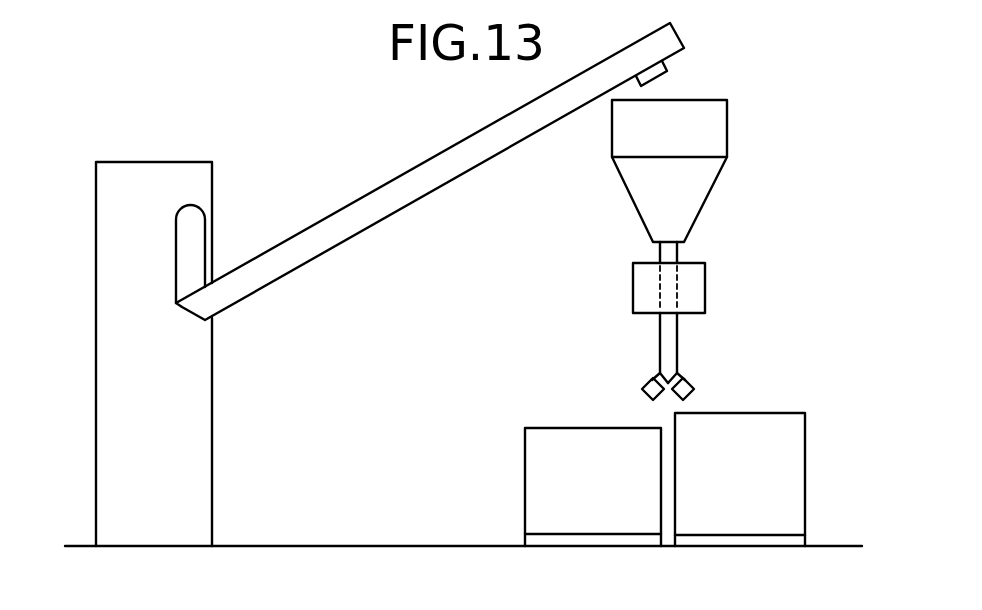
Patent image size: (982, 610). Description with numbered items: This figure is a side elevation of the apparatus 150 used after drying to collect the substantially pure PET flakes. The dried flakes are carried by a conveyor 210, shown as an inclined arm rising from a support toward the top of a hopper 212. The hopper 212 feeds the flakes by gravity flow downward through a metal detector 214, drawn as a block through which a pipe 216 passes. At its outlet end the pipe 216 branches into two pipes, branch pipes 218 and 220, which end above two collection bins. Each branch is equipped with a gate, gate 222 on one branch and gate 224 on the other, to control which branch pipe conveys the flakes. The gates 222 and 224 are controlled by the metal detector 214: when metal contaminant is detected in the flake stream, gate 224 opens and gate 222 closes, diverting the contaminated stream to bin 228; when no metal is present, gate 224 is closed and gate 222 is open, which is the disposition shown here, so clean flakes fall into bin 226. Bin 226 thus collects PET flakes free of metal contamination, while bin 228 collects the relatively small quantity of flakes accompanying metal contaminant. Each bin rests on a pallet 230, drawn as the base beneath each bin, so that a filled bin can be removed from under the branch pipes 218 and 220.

The filling station assembly 150 is at (783, 148).
The conveyor 210 is at (386, 183).
The hopper 212 is at (727, 112).
The metal detector 214 is at (705, 272).
The pipe 216 is at (677, 338).
The branch pipe 218 is at (692, 387).
The branch pipe 220 is at (647, 387).
The gate 222 is at (680, 373).
The gate 224 is at (660, 372).
The bin 226 is at (805, 458).
The bin 228 is at (525, 462).
The pallet 230 is at (525, 538).